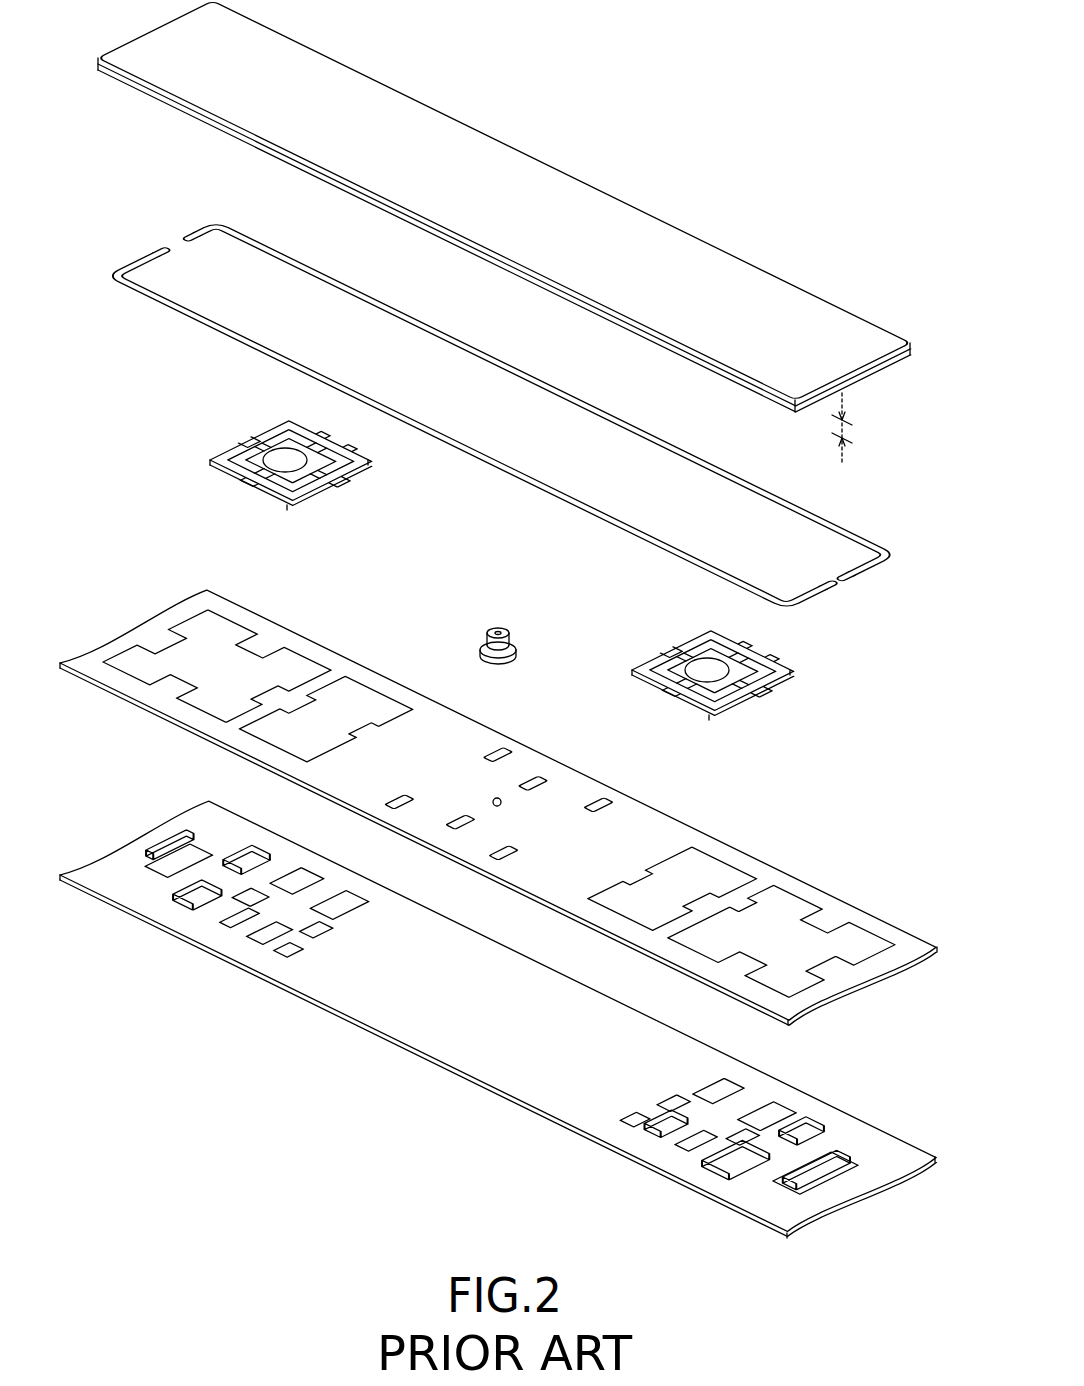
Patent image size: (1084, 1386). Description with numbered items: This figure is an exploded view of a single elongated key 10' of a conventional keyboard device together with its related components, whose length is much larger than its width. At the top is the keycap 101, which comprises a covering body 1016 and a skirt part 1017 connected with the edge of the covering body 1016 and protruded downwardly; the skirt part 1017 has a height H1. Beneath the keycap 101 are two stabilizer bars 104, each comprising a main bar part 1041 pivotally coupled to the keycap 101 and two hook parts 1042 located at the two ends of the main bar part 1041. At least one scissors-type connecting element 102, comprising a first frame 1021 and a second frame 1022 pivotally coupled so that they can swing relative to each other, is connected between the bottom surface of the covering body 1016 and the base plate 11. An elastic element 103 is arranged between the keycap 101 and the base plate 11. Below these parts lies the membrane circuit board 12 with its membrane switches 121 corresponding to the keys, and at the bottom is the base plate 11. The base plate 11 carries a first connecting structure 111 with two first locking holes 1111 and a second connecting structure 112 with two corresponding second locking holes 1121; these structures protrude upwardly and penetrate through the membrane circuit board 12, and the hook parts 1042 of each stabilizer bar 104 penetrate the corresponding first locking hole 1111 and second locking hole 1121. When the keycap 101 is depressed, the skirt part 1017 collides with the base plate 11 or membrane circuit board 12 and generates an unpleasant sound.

The key 10' is at (503, 637).
The keycap 101 is at (813, 285).
The covering body 1016 is at (573, 202).
The skirt part 1017 is at (437, 232).
The height of skirt part H1 is at (861, 427).
The stabilizer bar 104 is at (150, 292).
The main bar part 1041 is at (501, 415).
The hook part 1042 is at (548, 385).
The scissors-type connecting element 102 is at (267, 413).
The first frame 1021 is at (342, 467).
The second frame 1022 is at (262, 447).
The elastic element 103 is at (495, 627).
The membrane circuit board 12 is at (643, 823).
The membrane switch 121 is at (495, 798).
The base plate 11 is at (372, 1000).
The first connecting structure 111 is at (797, 1177).
The first locking hole 1111 is at (848, 1167).
The second connecting structure 112 is at (143, 857).
The second locking hole 1121 is at (172, 838).